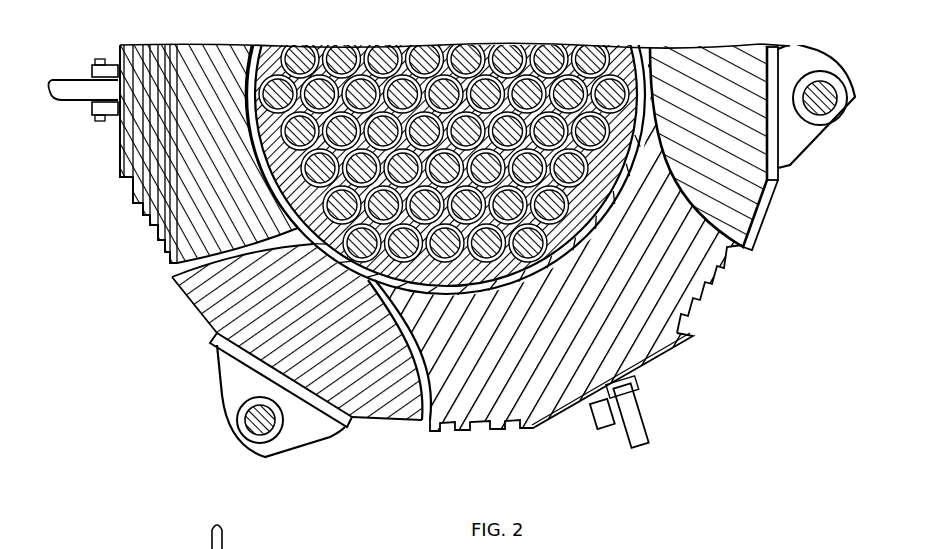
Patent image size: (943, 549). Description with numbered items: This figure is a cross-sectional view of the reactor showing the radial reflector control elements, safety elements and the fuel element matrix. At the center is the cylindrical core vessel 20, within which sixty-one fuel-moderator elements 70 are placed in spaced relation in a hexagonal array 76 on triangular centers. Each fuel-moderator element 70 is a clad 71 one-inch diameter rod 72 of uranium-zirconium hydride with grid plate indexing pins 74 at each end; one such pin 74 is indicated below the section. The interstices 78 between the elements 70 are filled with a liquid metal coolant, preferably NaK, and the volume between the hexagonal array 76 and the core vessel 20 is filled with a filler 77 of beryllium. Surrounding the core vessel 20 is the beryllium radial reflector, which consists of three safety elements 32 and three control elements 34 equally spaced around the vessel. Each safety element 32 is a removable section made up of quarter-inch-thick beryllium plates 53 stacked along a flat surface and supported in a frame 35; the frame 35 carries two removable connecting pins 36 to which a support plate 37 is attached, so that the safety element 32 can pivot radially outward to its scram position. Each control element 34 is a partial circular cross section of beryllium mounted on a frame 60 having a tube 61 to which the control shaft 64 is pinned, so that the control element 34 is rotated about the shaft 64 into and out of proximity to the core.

The core vessel 20 is at (258, 183).
The safety element 32 is at (224, 54).
The control element 34 is at (370, 410).
The frame 35 is at (136, 204).
The connecting pin 36 is at (100, 118).
The support plate 37 is at (70, 90).
The plate 53 is at (166, 243).
The frame 60 is at (222, 367).
The tube 61 is at (240, 412).
The control shaft 64 is at (257, 424).
The fuel-moderator element 70 is at (302, 50).
The clad 71 is at (472, 54).
The rod 72 is at (385, 49).
The grid plate indexing pin 74 is at (224, 540).
The hexagonal array 76 is at (577, 210).
The filler 77 is at (441, 280).
The interstices 78 is at (548, 78).